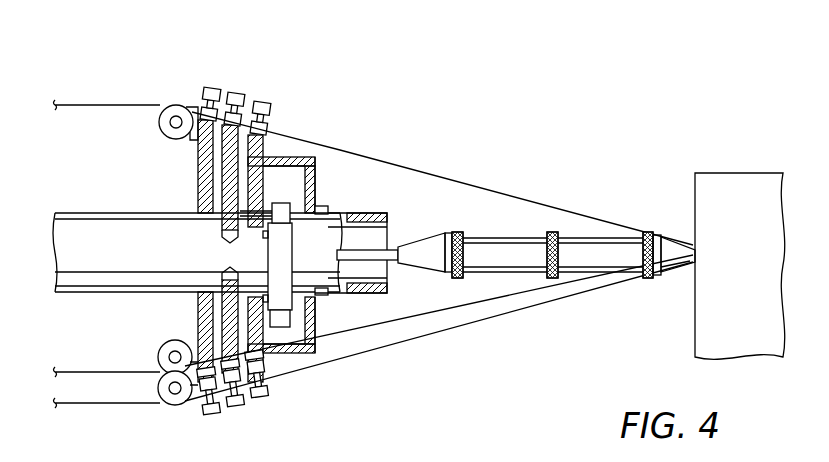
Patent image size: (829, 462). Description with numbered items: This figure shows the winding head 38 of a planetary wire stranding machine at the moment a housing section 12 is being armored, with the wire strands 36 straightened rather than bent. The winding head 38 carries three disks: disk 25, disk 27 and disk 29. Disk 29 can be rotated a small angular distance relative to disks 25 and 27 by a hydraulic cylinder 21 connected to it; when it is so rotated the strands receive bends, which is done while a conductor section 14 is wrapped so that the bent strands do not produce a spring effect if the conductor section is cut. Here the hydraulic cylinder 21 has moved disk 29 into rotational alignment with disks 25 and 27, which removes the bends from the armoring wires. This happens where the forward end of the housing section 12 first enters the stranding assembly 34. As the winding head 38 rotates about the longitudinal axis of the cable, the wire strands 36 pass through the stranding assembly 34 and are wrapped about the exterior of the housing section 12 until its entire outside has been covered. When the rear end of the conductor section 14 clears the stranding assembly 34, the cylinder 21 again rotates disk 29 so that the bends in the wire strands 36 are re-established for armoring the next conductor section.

The housing section 12 is at (517, 236).
The conductor section 14 is at (378, 253).
The hydraulic cylinder 21 is at (280, 252).
The disk 25 is at (266, 131).
The disk 27 is at (200, 118).
The disk 29 is at (230, 120).
The stranding assembly 34 is at (737, 185).
The wire strands 36 is at (472, 186).
The winding head 38 is at (363, 115).